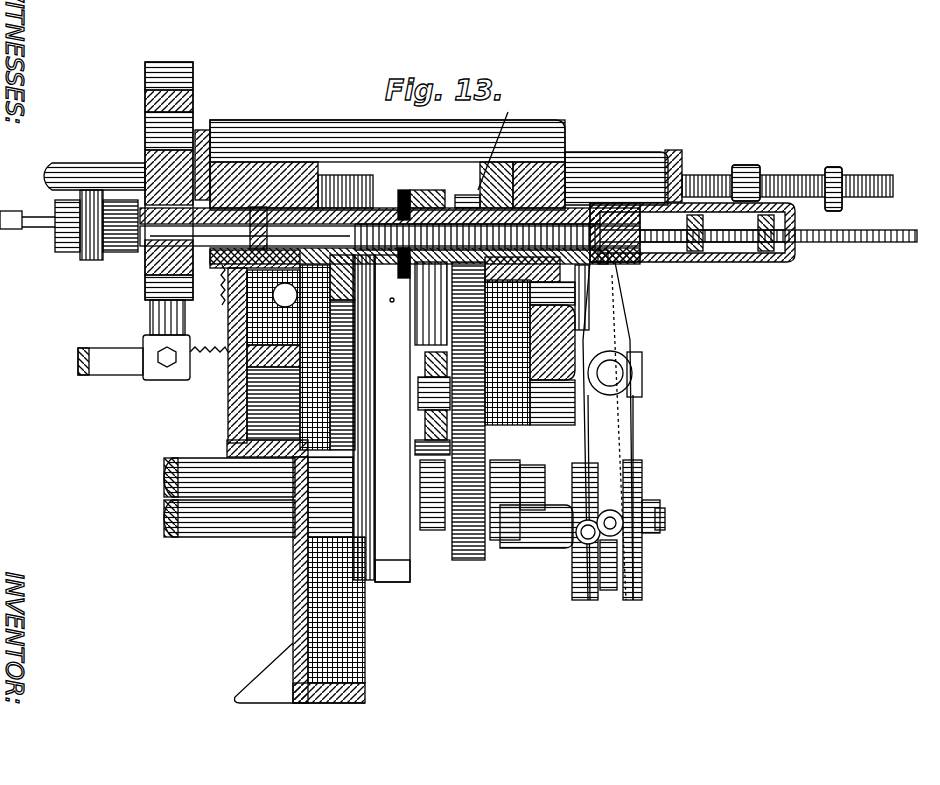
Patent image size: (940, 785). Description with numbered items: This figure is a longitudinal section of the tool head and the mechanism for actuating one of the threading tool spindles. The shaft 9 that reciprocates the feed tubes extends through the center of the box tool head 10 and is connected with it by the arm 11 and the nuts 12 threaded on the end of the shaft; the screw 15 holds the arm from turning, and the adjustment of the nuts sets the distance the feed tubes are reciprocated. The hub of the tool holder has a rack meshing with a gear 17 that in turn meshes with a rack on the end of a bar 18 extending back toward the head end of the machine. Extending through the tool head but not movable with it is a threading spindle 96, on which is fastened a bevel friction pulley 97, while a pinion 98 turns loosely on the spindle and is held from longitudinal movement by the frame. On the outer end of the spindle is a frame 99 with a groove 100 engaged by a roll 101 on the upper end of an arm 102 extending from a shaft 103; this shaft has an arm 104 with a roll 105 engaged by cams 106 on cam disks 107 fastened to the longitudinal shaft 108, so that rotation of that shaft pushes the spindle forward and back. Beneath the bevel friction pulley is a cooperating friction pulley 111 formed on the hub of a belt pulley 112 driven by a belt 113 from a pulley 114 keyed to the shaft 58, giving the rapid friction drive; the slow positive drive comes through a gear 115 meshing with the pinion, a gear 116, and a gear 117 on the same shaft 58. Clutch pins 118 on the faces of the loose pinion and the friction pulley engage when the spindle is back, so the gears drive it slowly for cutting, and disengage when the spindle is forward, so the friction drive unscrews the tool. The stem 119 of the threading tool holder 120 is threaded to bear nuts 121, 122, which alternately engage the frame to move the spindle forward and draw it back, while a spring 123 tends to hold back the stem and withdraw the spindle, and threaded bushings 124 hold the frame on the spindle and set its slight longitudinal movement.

The shaft 9 is at (82, 174).
The box tool head 10 is at (145, 155).
The arm 11 is at (762, 185).
The nuts 12 is at (740, 168).
The screw 15 is at (672, 160).
The gear 17 is at (220, 293).
The bar 18 is at (78, 352).
The shaft 58 is at (170, 482).
The threading spindles 96 is at (520, 182).
The bevel friction pulley 97 is at (432, 190).
The pinion 98 is at (503, 141).
The frame 99 is at (768, 263).
The groove 100 is at (602, 208).
The rolls 101 is at (622, 262).
The arms 102 is at (630, 330).
The shaft 103 is at (635, 373).
The arm 104 is at (635, 427).
The roll 105 is at (648, 552).
The cams 106 is at (558, 542).
The cam disks 107 is at (632, 598).
The shaft 108 is at (664, 518).
The friction pulley 111 is at (433, 358).
The belt pulley 112 is at (396, 310).
The belt 113 is at (395, 418).
The pulley 114 is at (378, 468).
The gear 115 is at (540, 305).
The gear 116 is at (491, 411).
The gear 117 is at (465, 540).
The clutch pins 118 is at (462, 195).
The stem 119 is at (880, 243).
The threading tool holder 120 is at (127, 257).
The nut 121 is at (706, 263).
The nut 122 is at (798, 263).
The spring 123 is at (368, 160).
The threaded bushings 124 is at (640, 265).